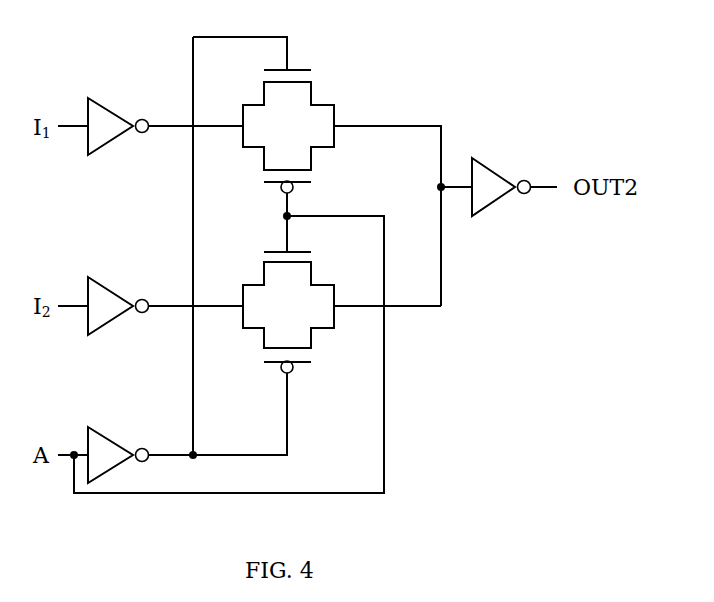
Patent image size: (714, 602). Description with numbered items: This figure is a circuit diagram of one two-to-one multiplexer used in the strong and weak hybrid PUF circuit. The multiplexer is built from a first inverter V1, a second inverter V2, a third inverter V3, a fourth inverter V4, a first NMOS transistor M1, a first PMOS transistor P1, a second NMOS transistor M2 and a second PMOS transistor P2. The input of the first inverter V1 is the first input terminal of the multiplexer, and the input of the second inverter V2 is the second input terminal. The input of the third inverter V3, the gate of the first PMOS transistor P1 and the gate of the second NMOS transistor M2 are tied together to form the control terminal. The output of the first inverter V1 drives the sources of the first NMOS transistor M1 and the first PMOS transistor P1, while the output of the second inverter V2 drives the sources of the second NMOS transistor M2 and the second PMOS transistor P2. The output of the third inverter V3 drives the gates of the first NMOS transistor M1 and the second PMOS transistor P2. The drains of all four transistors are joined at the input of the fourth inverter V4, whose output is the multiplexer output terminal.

The first inverter V1 is at (118, 126).
The second inverter V2 is at (118, 306).
The third inverter V3 is at (118, 455).
The fourth inverter V4 is at (501, 187).
The first NMOS transistor M1 is at (301, 120).
The first PMOS transistor P1 is at (308, 175).
The second NMOS transistor M2 is at (301, 295).
The second PMOS transistor P2 is at (308, 355).